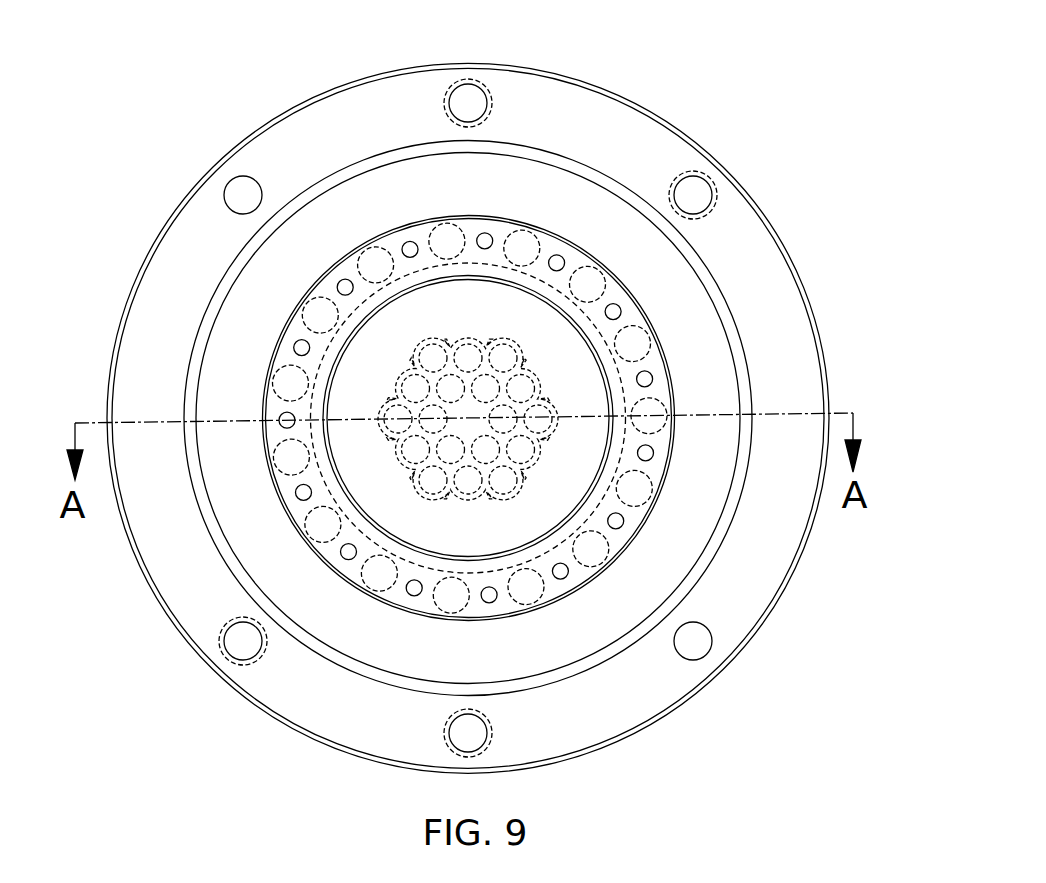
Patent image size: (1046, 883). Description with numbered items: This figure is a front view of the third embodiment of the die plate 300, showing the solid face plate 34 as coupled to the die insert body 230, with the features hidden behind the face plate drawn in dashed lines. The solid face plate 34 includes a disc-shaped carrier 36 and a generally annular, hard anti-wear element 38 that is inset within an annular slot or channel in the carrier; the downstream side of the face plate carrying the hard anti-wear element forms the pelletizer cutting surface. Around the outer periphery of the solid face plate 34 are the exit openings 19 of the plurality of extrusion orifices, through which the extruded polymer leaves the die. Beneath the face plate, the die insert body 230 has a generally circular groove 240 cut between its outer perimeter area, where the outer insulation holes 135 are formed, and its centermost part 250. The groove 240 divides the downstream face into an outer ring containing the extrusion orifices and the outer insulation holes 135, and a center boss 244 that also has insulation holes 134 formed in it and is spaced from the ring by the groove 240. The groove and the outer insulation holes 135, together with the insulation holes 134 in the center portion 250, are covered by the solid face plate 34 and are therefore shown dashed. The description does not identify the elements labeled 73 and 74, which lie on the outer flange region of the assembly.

The die plate 300 is at (590, 56).
The outer insulation holes 135 is at (558, 230).
The solid face plate 34 is at (596, 238).
The hard anti-wear element 38 is at (617, 297).
The disc-shaped carrier 36 is at (656, 304).
The die insert body 230 is at (697, 350).
The flange 73 is at (787, 370).
The exit openings 19 is at (274, 406).
The center boss 244 is at (570, 477).
The circular groove 240 is at (539, 438).
The centermost part 250 is at (467, 427).
The insulation holes 134 is at (520, 498).
The bolt hole 74 is at (725, 641).